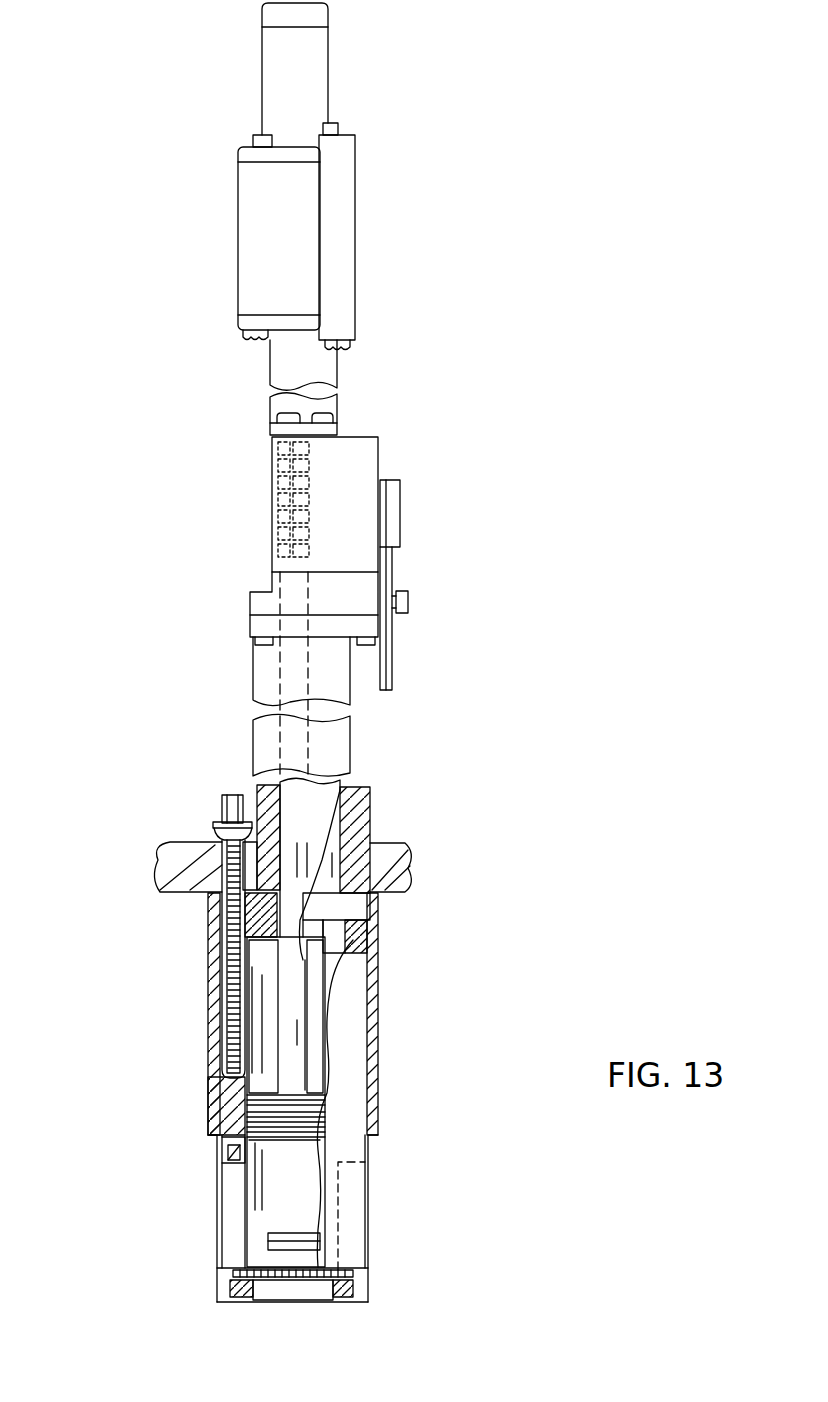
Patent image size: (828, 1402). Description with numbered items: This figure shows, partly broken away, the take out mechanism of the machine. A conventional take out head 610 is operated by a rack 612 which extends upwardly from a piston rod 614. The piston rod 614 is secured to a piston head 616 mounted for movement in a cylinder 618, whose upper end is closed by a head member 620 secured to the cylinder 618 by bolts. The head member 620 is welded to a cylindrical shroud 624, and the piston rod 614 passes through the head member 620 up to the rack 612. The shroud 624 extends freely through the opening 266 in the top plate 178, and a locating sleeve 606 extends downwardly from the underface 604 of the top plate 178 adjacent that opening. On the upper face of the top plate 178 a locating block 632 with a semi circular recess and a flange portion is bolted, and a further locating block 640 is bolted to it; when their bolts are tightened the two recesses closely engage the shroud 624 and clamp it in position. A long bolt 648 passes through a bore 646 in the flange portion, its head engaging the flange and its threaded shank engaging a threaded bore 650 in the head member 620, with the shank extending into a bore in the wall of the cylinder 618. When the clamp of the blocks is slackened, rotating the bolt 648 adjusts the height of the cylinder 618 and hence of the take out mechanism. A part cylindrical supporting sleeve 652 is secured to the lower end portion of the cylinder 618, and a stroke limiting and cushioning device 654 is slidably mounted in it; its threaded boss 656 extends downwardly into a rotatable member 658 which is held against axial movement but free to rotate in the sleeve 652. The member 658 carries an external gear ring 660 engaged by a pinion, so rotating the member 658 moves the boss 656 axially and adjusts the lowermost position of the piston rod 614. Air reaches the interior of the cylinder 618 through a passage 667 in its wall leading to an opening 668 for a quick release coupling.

The take out head 610 is at (452, 379).
The rack 612 is at (278, 446).
The cylindrical shroud 624 is at (333, 682).
The piston rod 614 is at (257, 797).
The opening 266 is at (368, 815).
The locating block 640 is at (357, 793).
The locating block 632 is at (213, 837).
The bore 646 is at (222, 845).
The top plate 178 is at (403, 870).
The threaded bore 650 is at (233, 883).
The long bolt 648 is at (233, 960).
The head member 620 is at (253, 910).
The underface 604 is at (400, 896).
The passage 667 is at (353, 953).
The locating sleeve 606 is at (378, 1027).
The cylinder 618 is at (233, 1097).
The supporting sleeve 652 is at (247, 1198).
The piston head 616 is at (325, 1112).
The opening 668 is at (222, 1173).
The stroke limiting and cushioning device 654 is at (305, 1190).
The threaded boss 656 is at (270, 1245).
The external gear ring 660 is at (257, 1288).
The rotatable member 658 is at (327, 1300).